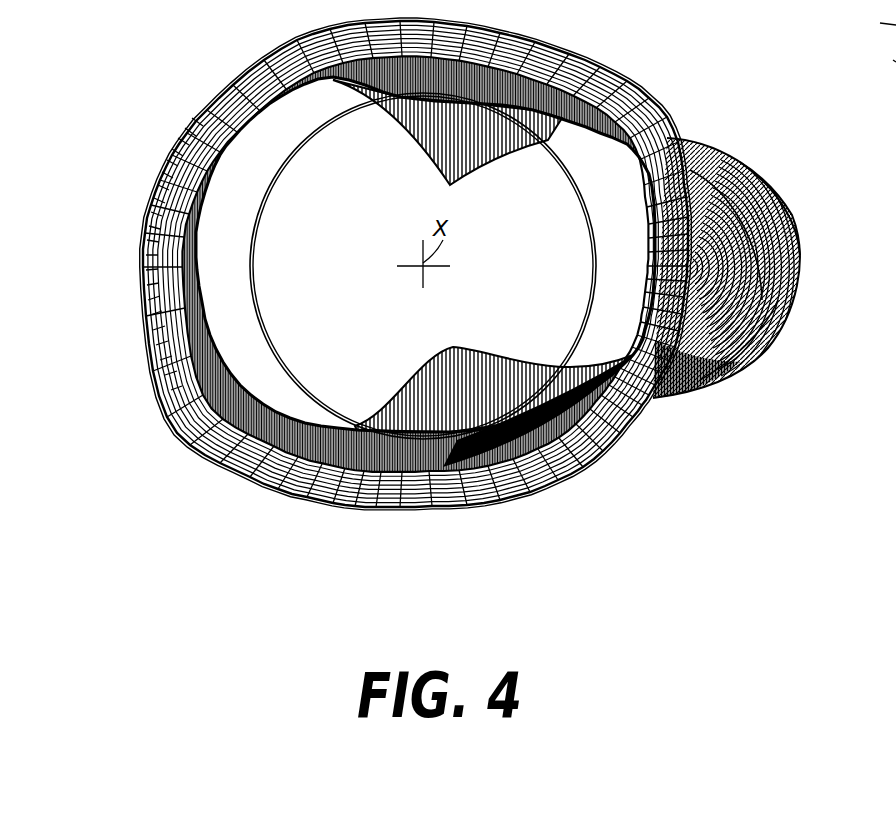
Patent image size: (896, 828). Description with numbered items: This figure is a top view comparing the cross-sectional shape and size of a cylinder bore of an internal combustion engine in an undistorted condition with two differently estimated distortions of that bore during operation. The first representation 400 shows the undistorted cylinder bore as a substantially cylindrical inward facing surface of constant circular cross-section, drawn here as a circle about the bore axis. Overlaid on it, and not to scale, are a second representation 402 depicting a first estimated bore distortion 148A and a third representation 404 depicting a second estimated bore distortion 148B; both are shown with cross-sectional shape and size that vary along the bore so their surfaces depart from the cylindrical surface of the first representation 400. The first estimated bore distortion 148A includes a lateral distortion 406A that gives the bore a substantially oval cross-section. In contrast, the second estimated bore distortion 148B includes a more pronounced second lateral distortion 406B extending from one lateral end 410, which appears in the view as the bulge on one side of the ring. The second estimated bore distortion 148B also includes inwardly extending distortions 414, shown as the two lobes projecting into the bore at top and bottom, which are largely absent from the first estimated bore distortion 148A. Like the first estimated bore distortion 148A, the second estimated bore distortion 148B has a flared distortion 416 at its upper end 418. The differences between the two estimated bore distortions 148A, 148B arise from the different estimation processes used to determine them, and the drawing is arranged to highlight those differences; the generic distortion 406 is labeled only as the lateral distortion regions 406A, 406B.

The first representation 400 is at (253, 265).
The second representation 402 is at (593, 90).
The third representation 404 is at (197, 130).
The sealing flap 406 is at (162, 276).
The lateral distortion 406A is at (683, 180).
The second lateral distortion 406B is at (780, 310).
The lateral end 410 is at (782, 223).
The inwardly extending distortions 414 is at (410, 140).
The first estimated bore distortion 148A is at (613, 103).
The second estimated bore distortion 148B is at (172, 158).
The flared distortion 416 is at (881, 66).
The upper end 418 is at (872, 26).